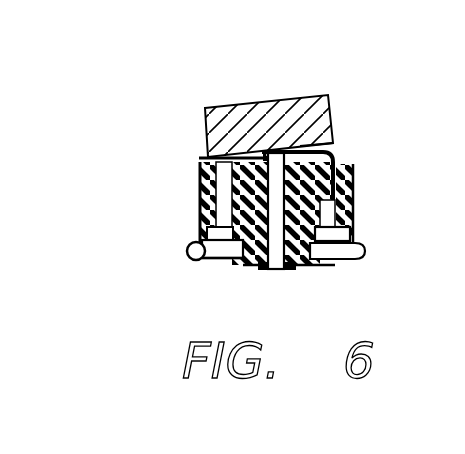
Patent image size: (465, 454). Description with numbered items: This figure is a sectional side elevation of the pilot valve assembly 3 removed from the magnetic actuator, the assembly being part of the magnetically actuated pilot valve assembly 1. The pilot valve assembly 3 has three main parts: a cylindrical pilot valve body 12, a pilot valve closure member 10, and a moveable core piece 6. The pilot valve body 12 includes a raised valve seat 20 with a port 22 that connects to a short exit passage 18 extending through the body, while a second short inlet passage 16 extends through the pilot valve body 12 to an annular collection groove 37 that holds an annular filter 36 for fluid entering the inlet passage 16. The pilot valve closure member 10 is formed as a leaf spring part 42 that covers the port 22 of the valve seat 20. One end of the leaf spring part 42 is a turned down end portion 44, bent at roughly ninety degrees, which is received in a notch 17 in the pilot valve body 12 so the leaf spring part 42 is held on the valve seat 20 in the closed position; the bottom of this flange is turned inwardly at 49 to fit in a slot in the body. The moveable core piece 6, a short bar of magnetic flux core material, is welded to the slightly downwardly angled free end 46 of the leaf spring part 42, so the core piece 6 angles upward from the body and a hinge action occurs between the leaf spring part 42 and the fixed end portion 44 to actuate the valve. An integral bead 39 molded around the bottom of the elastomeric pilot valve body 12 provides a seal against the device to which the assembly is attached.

The magnetically actuated pilot valve assembly 1 is at (400, 137).
The pilot valve assembly 3 is at (212, 264).
The moveable core piece 6 is at (243, 104).
The pilot valve closure member 10 is at (338, 150).
The pilot valve body 12 is at (337, 260).
The inlet passage 16 is at (207, 218).
The notch 17 is at (335, 200).
The exit passage 18 is at (277, 222).
The valve seat 20 is at (205, 163).
The port 22 is at (225, 181).
The annular filter 36 is at (193, 258).
The annular collection groove 37 is at (232, 252).
The integral bead 39 is at (363, 252).
The leaf spring part 42 is at (305, 152).
The turned down end portion 44 is at (325, 152).
The free end 46 is at (268, 157).
The inwardly turned bottom 49 is at (335, 212).